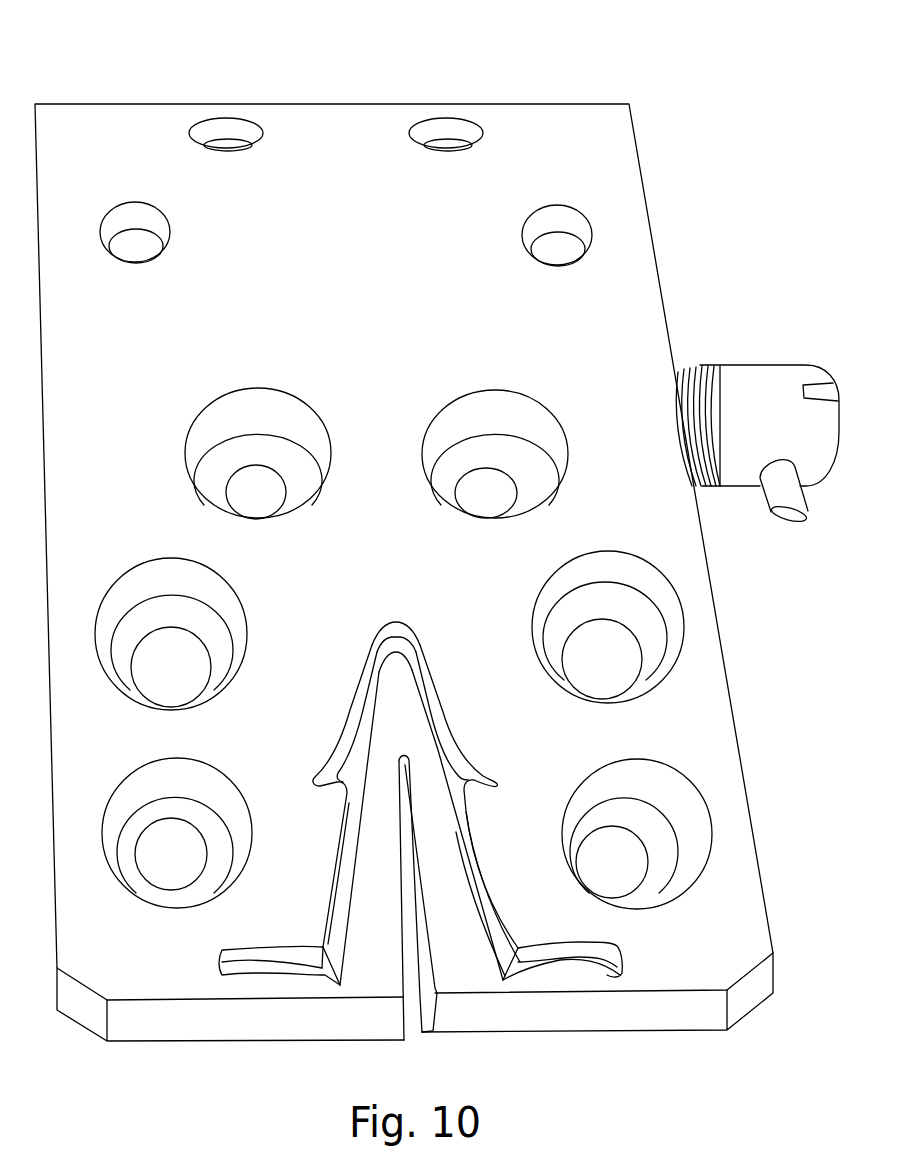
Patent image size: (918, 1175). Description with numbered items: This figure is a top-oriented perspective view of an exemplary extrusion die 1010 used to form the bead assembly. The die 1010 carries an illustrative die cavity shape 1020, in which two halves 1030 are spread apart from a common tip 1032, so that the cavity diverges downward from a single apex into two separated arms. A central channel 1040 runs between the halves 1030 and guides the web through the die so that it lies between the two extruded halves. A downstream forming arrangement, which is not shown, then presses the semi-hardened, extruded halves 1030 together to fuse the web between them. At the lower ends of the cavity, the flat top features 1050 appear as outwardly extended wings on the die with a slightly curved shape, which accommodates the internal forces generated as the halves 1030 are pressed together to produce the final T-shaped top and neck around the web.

The extrusion die 1010 is at (480, 94).
The die cavity shape 1020 is at (358, 966).
The halves 1030 is at (335, 849).
The common tip 1032 is at (396, 614).
The central channel 1040 is at (433, 948).
The flat top features 1050 is at (264, 970).